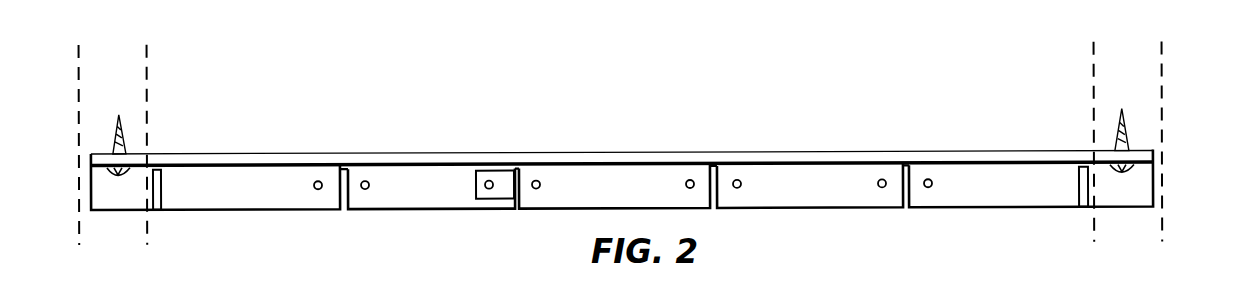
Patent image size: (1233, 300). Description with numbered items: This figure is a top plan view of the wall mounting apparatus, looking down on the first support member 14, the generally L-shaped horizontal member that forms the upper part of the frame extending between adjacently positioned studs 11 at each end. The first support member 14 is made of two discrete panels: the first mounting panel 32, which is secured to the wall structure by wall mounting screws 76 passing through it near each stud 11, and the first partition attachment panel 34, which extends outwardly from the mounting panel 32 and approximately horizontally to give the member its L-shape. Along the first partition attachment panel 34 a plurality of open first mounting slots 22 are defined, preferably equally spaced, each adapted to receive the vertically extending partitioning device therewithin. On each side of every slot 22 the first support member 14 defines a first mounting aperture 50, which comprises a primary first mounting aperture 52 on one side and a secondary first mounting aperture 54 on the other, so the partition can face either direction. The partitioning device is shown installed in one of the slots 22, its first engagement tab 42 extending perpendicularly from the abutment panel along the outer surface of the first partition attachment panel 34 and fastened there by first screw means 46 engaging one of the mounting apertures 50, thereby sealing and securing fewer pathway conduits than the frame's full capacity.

The stud 11 is at (148, 103).
The first support member 14 is at (422, 162).
The first mounting slot 22 is at (343, 169).
The first mounting panel 32 is at (273, 153).
The first partition attachment panel 34 is at (255, 193).
The first engagement tab 42 is at (486, 172).
The first screw means 46 is at (492, 182).
The first mounting aperture 50 is at (318, 182).
The primary first mounting aperture 52 is at (689, 181).
The secondary first mounting aperture 54 is at (367, 182).
The wall mounting screw 76 is at (113, 140).